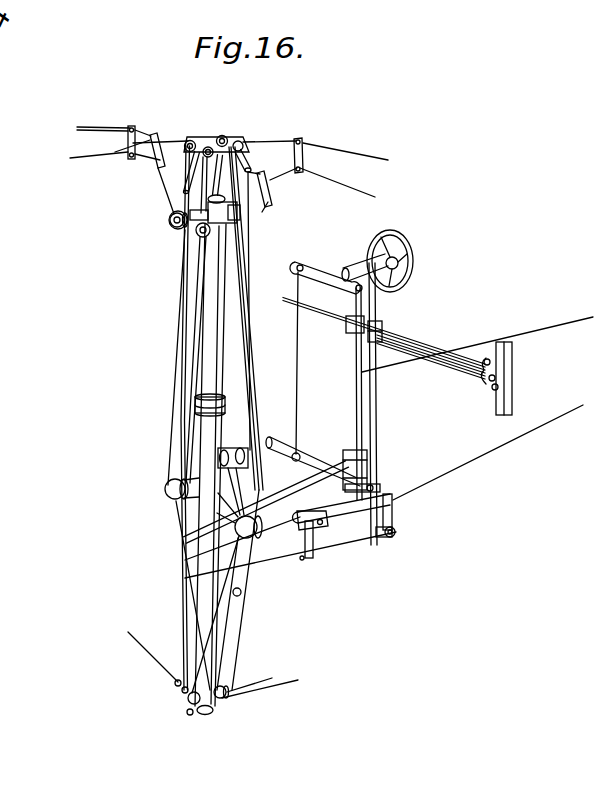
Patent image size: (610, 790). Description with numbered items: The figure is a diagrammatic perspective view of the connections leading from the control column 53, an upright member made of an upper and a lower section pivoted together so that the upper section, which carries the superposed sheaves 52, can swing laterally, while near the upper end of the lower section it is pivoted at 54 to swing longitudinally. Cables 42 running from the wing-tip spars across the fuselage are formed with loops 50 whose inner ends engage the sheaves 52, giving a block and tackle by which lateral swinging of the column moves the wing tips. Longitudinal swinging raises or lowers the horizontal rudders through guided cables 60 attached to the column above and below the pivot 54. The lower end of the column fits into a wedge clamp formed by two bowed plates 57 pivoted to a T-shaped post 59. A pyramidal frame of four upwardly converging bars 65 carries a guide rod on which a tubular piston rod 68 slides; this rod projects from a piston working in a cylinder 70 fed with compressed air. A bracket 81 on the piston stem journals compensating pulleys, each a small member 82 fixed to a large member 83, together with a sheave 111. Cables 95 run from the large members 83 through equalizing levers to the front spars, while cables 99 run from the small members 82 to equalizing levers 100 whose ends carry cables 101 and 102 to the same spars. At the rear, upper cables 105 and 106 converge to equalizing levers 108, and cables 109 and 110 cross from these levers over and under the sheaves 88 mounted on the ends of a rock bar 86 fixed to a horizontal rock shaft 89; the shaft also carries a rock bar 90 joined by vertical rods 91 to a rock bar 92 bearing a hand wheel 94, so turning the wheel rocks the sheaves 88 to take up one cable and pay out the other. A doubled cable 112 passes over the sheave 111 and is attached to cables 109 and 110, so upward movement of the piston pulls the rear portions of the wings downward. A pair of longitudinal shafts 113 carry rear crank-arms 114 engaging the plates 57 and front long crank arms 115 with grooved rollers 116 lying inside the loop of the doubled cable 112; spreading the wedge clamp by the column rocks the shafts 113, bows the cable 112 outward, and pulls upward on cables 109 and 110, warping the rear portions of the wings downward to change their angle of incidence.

The cables 42 is at (305, 305).
The loops 50 is at (425, 335).
The sheaves 52 is at (383, 323).
The control column 53 is at (372, 402).
The pivot 54 is at (350, 455).
The plates 57 is at (373, 522).
The T-shaped post 59 is at (312, 545).
The cables 60 is at (548, 328).
The bars 65 is at (228, 137).
The tubular piston rod 68 is at (213, 290).
The cylinder 70 is at (208, 430).
The bracket 81 is at (236, 224).
The small member 82 is at (174, 215).
The large member 83 is at (197, 232).
The rock bar 86 is at (236, 522).
The pulleys or sheaves 88 is at (166, 494).
The rock shaft 89 is at (305, 487).
The rock bar 90 is at (362, 490).
The vertical rods 91 is at (355, 396).
The rock bar 92 is at (320, 262).
The hand wheel 94 is at (412, 262).
The cables 95 is at (197, 258).
The cables 99 is at (170, 137).
The equalizing levers 100 is at (130, 130).
The cables 101 is at (78, 130).
The cables 102 is at (70, 160).
The cables 105 is at (115, 152).
The cables 106 is at (143, 172).
The equalizing levers 108 is at (305, 143).
The cable 109 is at (196, 138).
The cable 110 is at (252, 165).
The pulley or sheave 111 is at (265, 208).
The doubled cable 112 is at (242, 277).
The longitudinal shafts 113 is at (396, 538).
The crank-arms 114 is at (394, 514).
The long crank arms 115 is at (247, 463).
The grooved rollers 116 is at (238, 443).